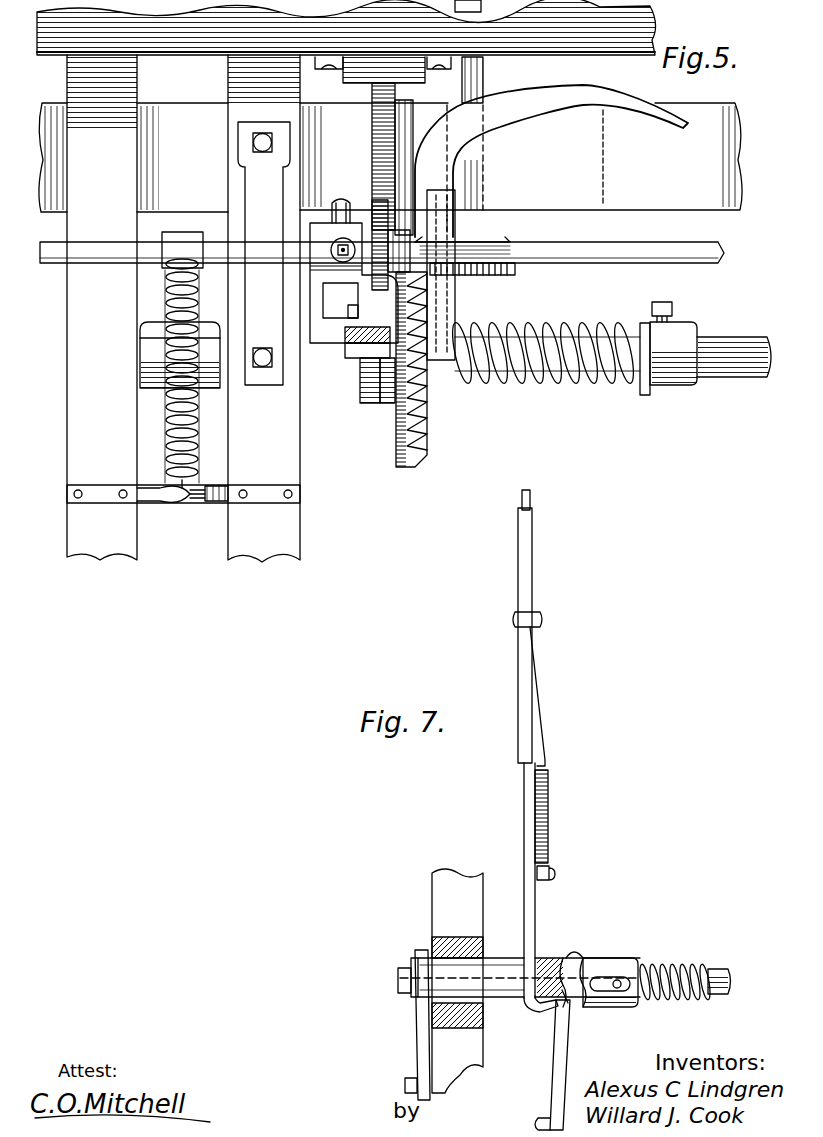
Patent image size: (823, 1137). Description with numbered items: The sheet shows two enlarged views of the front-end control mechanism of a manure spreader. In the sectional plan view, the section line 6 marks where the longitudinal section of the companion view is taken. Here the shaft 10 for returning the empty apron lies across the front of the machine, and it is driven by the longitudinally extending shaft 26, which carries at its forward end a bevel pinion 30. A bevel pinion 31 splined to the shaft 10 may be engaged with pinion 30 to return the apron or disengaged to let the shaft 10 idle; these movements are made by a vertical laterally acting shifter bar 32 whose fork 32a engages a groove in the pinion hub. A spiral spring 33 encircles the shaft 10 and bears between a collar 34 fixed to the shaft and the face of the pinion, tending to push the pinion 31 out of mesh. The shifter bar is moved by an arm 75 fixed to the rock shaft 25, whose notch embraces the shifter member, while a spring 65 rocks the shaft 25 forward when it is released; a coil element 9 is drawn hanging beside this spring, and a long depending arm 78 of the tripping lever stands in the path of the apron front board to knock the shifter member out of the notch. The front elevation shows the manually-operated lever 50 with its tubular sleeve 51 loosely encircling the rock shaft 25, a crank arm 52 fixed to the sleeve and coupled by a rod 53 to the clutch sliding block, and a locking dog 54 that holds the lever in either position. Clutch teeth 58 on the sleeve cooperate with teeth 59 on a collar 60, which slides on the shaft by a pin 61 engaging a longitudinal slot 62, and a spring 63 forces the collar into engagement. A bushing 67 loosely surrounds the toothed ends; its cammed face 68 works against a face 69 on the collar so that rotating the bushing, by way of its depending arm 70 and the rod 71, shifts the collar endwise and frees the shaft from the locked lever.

In FIG. 5, the spreader cylinder 6 is at (231, 443).
In FIG. 5, the spring 9 is at (165, 400).
In FIG. 5, the shaft 10 is at (728, 368).
In FIG. 5, the rock shaft 25 is at (615, 262).
In FIG. 7, the rock shaft 25 is at (728, 973).
In FIG. 5, the longitudinally extending shaft 26 is at (470, 72).
In FIG. 5, the bevel pinion 30 is at (512, 266).
In FIG. 5, the bevel pinion 31 is at (425, 432).
In FIG. 5, the shifter bar 32 is at (372, 333).
In FIG. 5, the fork 32a is at (375, 405).
In FIG. 5, the spiral spring 33 is at (548, 388).
In FIG. 5, the collar 34 is at (672, 372).
In FIG. 5, the spring 65 is at (162, 345).
In FIG. 5, the arm 75 is at (354, 271).
In FIG. 5, the depending arm 78 is at (385, 148).
In FIG. 7, the manually-operated lever 50 is at (518, 672).
In FIG. 7, the tubular sleeve 51 is at (498, 965).
In FIG. 7, the crank arm 52 is at (420, 1033).
In FIG. 7, the rod 53 is at (412, 1080).
In FIG. 7, the locking dog 54 is at (541, 878).
In FIG. 7, the clutch teeth 58 is at (550, 975).
In FIG. 7, the teeth 59 is at (570, 980).
In FIG. 7, the collar 60 is at (627, 962).
In FIG. 7, the pin 61 is at (620, 990).
In FIG. 7, the longitudinal slot 62 is at (614, 990).
In FIG. 7, the spring 63 is at (677, 965).
In FIG. 7, the bushing 67 is at (545, 1012).
In FIG. 7, the cammed face 68 is at (582, 960).
In FIG. 7, the cam face 69 is at (571, 1001).
In FIG. 7, the depending arm 70 is at (554, 1073).
In FIG. 7, the rod 71 is at (540, 1122).